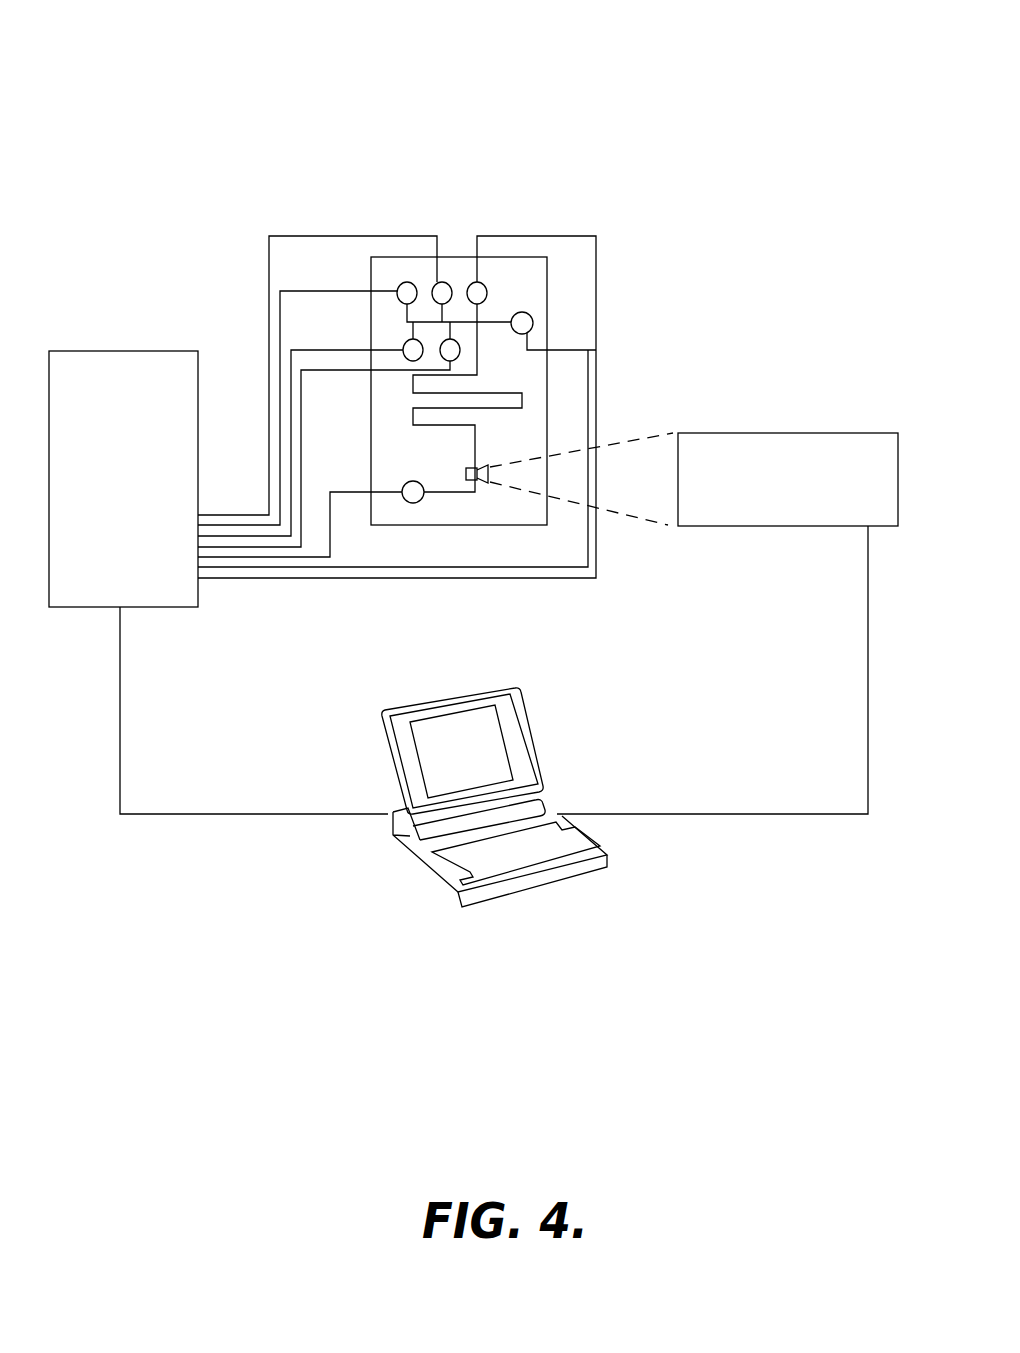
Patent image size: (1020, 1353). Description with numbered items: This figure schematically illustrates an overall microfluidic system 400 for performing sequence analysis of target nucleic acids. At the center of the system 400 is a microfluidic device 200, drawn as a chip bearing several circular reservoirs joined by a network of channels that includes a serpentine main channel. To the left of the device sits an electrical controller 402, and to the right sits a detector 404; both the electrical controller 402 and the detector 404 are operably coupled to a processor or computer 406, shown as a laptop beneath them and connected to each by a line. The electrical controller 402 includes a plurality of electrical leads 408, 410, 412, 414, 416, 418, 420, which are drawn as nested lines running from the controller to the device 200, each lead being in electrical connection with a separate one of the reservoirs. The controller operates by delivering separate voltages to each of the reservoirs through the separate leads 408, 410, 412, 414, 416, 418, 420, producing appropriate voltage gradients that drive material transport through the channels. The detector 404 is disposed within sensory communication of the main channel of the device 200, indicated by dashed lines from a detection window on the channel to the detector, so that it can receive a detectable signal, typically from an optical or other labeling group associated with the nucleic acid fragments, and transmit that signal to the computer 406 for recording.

The system 400 is at (153, 70).
The electrical controller 402 is at (123, 479).
The detector 404 is at (694, 479).
The processor or computer 406 is at (494, 782).
The electrical lead 408 is at (547, 234).
The electrical lead 410 is at (349, 494).
The electrical lead 412 is at (297, 289).
The electrical lead 414 is at (297, 236).
The electrical lead 416 is at (295, 348).
The electrical lead 418 is at (293, 368).
The electrical lead 420 is at (587, 349).
The microfluidic device 200 is at (529, 282).